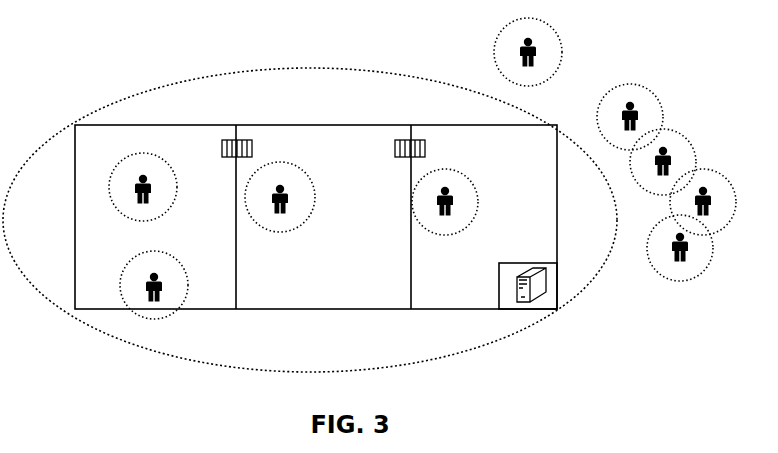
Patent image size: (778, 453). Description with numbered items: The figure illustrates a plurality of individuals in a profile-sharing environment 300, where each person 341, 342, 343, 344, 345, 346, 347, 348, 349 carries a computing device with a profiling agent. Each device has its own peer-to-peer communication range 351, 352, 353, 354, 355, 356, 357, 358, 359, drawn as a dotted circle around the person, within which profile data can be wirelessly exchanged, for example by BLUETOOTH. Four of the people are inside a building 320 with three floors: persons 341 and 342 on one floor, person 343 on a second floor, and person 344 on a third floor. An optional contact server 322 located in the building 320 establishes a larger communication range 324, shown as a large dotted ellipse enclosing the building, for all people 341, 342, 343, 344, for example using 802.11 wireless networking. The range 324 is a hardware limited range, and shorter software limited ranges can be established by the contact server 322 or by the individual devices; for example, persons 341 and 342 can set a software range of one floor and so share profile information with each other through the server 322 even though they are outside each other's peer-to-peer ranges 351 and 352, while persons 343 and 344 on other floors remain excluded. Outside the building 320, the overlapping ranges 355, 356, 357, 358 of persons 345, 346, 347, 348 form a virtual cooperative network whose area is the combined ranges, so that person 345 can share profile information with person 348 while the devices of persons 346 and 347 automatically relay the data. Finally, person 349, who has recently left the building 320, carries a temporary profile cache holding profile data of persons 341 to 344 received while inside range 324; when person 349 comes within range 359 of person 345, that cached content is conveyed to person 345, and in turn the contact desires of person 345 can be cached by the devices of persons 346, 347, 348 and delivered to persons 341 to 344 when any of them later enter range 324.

The profile-sharing environment 300 is at (60, 34).
The building 320 is at (138, 125).
The contact server 322 is at (517, 302).
The communication range 324 is at (405, 363).
The person 341 is at (153, 184).
The person 342 is at (162, 285).
The person 343 is at (290, 197).
The person 344 is at (455, 199).
The person 345 is at (640, 117).
The person 346 is at (672, 162).
The person 347 is at (712, 202).
The person 348 is at (690, 248).
The person 349 is at (538, 50).
The communication range 351 is at (168, 216).
The communication range 352 is at (172, 316).
The communication range 353 is at (306, 221).
The communication range 354 is at (468, 228).
The communication range 355 is at (652, 89).
The communication range 356 is at (693, 140).
The communication range 357 is at (727, 223).
The communication range 358 is at (690, 281).
The communication range 359 is at (560, 70).